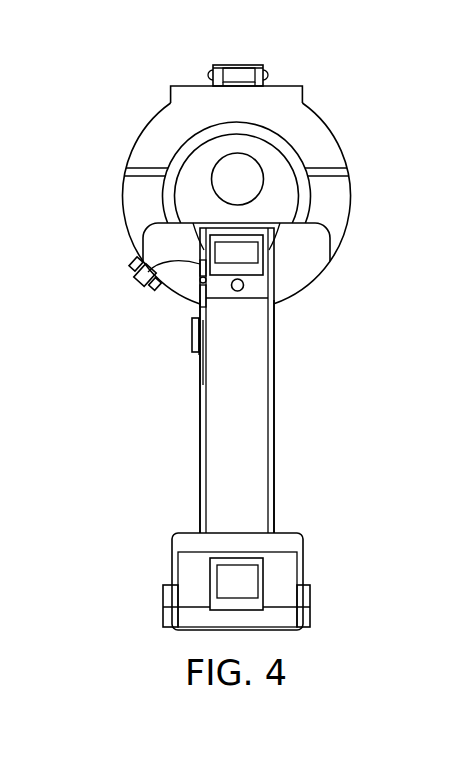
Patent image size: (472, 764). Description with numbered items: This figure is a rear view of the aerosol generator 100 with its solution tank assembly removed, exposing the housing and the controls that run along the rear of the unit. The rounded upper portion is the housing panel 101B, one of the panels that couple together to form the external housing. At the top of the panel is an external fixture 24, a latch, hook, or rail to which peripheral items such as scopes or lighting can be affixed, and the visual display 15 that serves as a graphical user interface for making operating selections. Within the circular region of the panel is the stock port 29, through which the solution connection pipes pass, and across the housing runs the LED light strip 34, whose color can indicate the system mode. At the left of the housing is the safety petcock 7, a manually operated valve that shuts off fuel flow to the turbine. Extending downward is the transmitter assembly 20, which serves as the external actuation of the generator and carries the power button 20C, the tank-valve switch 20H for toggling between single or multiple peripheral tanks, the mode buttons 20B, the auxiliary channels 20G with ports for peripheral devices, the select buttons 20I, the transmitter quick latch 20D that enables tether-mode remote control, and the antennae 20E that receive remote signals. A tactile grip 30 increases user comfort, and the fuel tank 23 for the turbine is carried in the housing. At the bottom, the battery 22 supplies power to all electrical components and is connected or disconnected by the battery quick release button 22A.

The aerosol generator 100 is at (138, 135).
The panel 101B is at (297, 135).
The visual display 15 is at (275, 86).
The external fixture 24 is at (207, 75).
The stock port 29 is at (212, 178).
The LED light strip 34 is at (349, 172).
The safety petcock 7 is at (131, 260).
The power button 20C is at (134, 277).
The tank-valve switch 20H is at (200, 268).
The mode buttons 20B is at (200, 300).
The auxiliary channels 20G is at (195, 320).
The tactile grip 30 is at (199, 355).
The select buttons 20I is at (203, 385).
The transmitter quick latch 20D is at (263, 258).
The antennae 20E is at (244, 286).
The transmitter assembly 20 is at (268, 432).
The fuel tank 23 is at (275, 478).
The battery 22 is at (172, 536).
The battery quick release button 22A is at (210, 592).